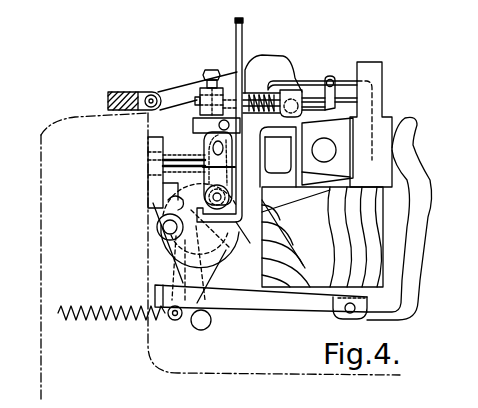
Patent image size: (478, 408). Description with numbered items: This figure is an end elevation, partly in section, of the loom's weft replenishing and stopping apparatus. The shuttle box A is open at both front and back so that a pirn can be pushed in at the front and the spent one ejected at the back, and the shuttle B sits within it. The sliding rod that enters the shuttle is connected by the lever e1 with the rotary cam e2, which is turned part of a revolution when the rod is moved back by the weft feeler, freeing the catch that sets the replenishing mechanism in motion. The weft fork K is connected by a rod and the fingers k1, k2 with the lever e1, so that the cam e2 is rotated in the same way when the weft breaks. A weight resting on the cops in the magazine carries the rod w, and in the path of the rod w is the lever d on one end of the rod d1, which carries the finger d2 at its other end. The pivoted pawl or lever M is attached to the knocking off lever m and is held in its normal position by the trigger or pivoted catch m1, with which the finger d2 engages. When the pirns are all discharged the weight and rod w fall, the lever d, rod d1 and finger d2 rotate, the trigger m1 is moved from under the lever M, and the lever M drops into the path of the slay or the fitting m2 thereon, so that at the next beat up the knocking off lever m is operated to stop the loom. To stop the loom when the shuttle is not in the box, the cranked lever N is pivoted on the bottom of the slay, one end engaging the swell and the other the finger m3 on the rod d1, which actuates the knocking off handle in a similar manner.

The rod w is at (236, 40).
The pivoted pawl or lever M is at (257, 77).
The weft fork K is at (312, 83).
The shuttle box A is at (354, 120).
The knocking off lever m is at (172, 91).
The lever e1 is at (205, 168).
The finger k1 is at (173, 163).
The finger k2 is at (205, 167).
The finger d2 is at (173, 192).
The rotary cam e2 is at (230, 195).
The fitting m2 is at (296, 156).
The shuttle B is at (327, 151).
The rod d1 is at (165, 230).
The lever d is at (202, 250).
The lever N is at (418, 262).
The trigger or pivoted catch m1 is at (120, 324).
The finger m3 is at (205, 326).